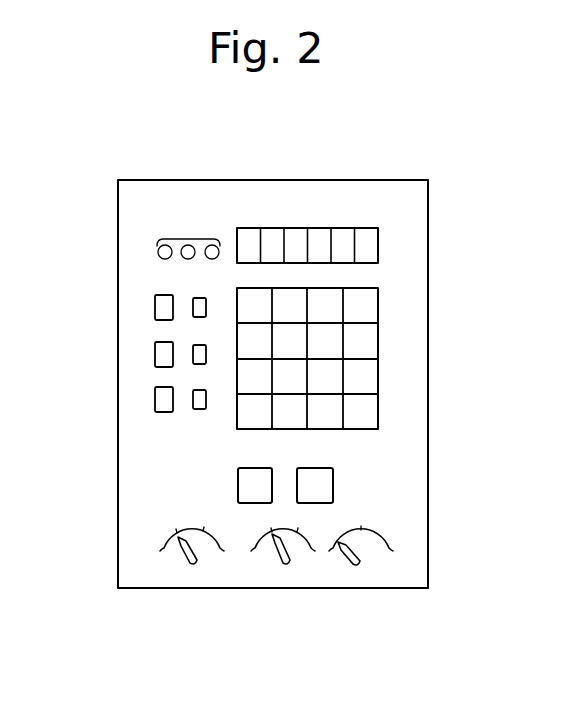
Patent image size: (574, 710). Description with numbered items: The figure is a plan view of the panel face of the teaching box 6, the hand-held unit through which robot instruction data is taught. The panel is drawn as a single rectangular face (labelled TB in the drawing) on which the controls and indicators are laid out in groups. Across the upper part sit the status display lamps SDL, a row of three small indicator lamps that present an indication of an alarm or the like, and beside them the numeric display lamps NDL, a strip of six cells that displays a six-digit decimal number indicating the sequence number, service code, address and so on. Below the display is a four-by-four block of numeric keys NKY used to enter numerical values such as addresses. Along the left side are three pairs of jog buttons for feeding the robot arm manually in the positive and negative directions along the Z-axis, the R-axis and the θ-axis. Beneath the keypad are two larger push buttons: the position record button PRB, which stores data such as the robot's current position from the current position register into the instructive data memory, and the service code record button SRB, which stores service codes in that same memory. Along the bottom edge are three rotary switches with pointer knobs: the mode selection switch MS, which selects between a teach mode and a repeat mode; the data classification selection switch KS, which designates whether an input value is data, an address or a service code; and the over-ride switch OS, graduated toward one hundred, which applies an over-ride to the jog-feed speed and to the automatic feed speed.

The teaching box 6 is at (411, 179).
The teaching box TB is at (118, 575).
The status display lamps SDL is at (187, 239).
The numeric display lamps NDL is at (378, 246).
The numeric keys NKY is at (378, 360).
The position record button PRB is at (256, 468).
The service code record button SRB is at (322, 467).
The mode selection switch MS is at (183, 565).
The data classification selection switch KS is at (280, 565).
The over-ride switch OS is at (350, 565).